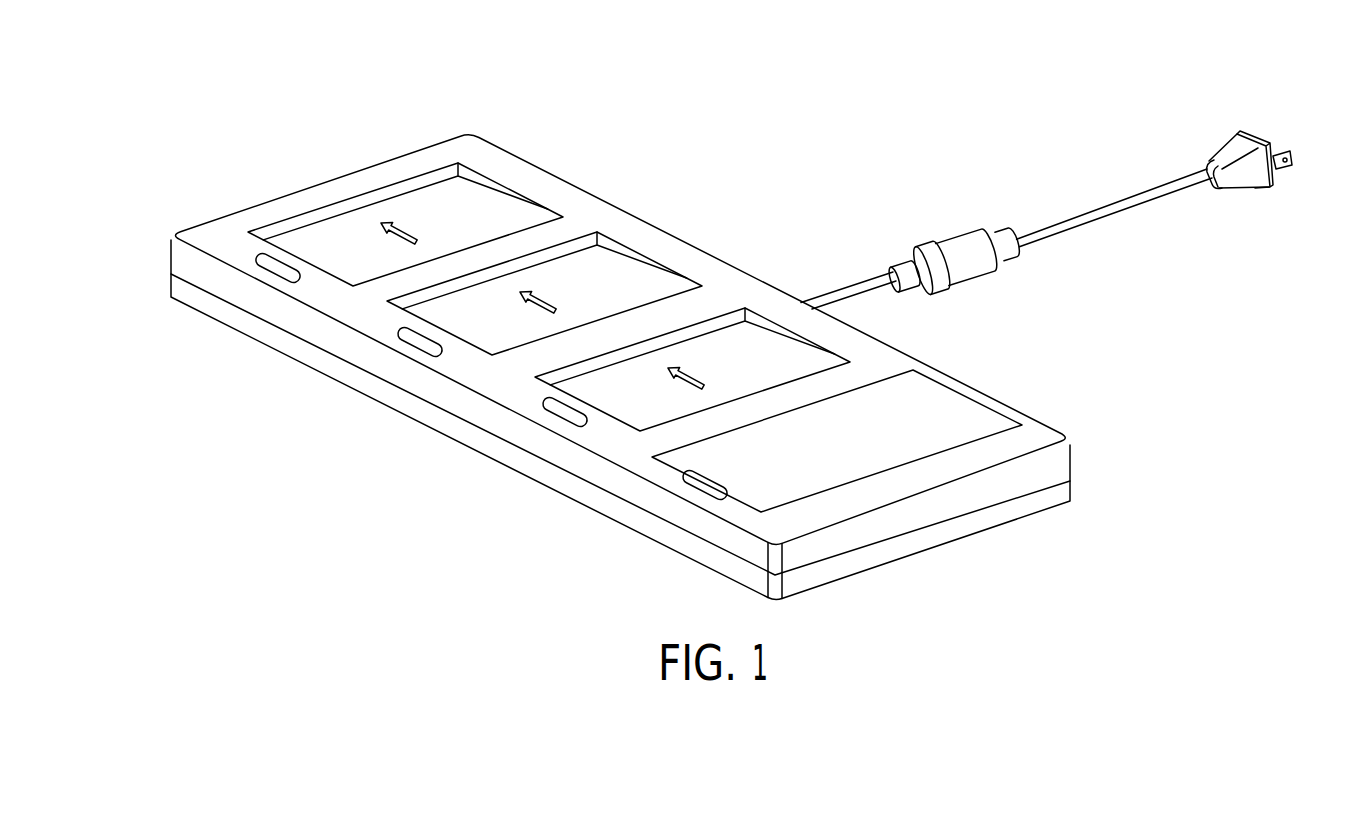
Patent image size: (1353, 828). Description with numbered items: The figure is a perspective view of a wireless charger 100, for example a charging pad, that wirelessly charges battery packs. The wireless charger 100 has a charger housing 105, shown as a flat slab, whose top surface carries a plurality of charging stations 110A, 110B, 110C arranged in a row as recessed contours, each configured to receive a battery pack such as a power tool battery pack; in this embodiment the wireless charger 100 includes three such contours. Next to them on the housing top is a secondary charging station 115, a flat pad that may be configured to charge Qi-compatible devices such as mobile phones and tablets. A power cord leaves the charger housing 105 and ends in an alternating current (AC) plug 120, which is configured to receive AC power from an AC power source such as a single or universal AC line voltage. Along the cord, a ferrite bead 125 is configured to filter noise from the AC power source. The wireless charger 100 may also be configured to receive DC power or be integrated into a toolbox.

The wireless charger 100 is at (170, 139).
The charger housing 105 is at (297, 362).
The charging station 110A is at (513, 202).
The charging station 110B is at (652, 268).
The charging station 110C is at (782, 333).
The secondary charging station 115 is at (990, 410).
The alternating current (AC) plug 120 is at (1248, 133).
The ferrite bead 125 is at (950, 234).